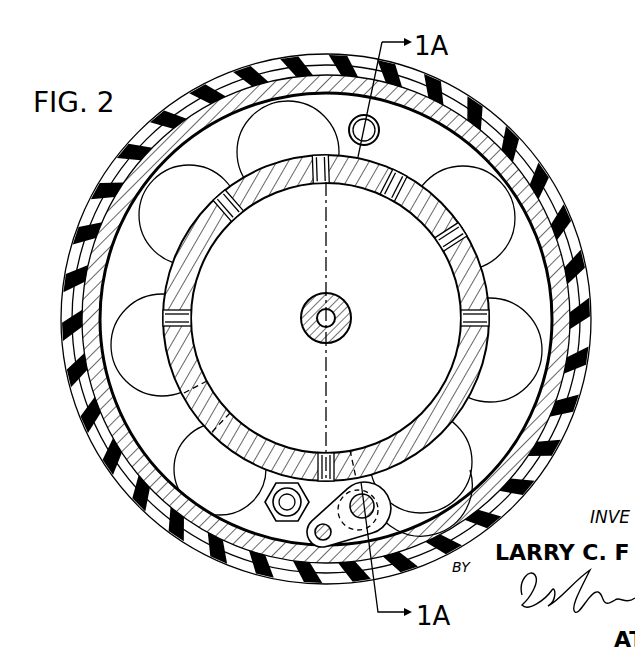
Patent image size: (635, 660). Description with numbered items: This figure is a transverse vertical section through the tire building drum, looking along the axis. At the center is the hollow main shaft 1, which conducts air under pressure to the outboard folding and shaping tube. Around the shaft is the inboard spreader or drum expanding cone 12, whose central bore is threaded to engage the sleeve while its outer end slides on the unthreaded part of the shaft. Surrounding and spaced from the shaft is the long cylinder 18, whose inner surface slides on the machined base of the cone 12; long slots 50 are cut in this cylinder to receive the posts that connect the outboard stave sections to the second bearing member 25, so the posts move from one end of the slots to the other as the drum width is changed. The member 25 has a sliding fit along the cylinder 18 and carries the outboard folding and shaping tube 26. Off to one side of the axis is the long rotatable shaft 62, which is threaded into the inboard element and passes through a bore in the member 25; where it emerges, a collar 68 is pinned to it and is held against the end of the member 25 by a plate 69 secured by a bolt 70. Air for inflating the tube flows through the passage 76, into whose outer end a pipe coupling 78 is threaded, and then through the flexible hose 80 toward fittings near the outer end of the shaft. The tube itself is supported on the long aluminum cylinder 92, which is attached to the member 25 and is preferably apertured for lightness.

The main shaft 1 is at (346, 318).
The inboard spreader or drum expanding cone 12 is at (458, 133).
The long cylinder 18 is at (478, 289).
The second bearing member 25 is at (118, 250).
The outboard folding and shaping tube 26 is at (584, 282).
The long slots 50 is at (334, 178).
The long rotatable shaft 62 is at (371, 504).
The collar 68 is at (407, 512).
The plate 69 is at (345, 540).
The bolt 70 is at (320, 540).
The passage 76 is at (378, 131).
The pipe coupling 78 is at (325, 452).
The flexible hose 80 is at (270, 502).
The long cylinder 92 is at (122, 186).